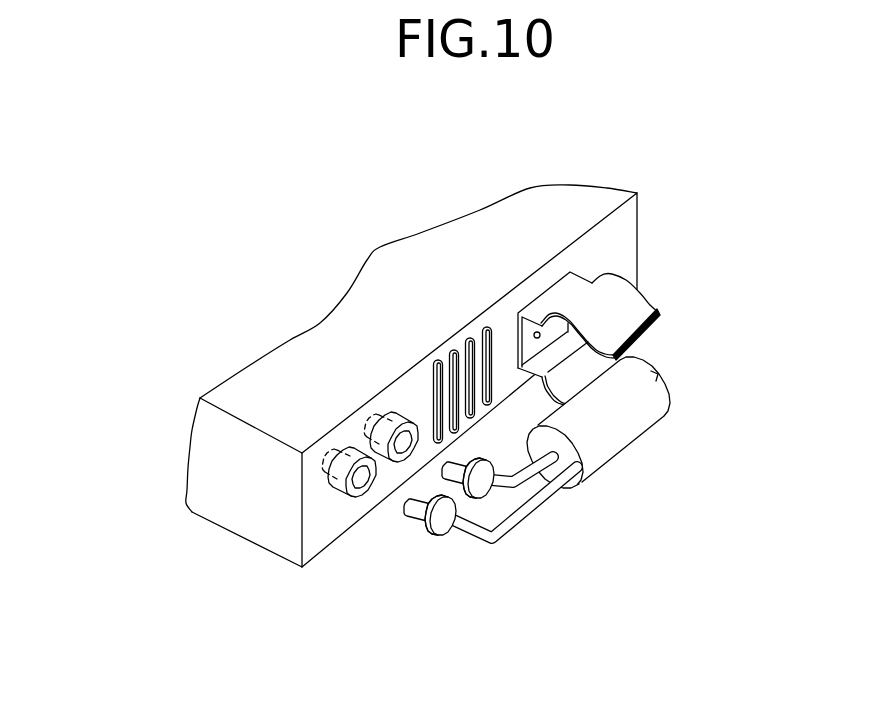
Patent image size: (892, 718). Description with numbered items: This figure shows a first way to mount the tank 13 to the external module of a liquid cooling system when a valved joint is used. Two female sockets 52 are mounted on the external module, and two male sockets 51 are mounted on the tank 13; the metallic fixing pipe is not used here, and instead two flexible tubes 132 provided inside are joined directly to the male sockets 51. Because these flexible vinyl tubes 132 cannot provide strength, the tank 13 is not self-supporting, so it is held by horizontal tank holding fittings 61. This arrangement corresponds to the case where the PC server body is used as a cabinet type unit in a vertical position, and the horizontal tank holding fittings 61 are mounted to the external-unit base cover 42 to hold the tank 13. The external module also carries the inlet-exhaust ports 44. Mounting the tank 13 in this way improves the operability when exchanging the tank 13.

The external-unit base cover 42 is at (215, 458).
The inlet-exhaust ports 44 is at (472, 337).
The female sockets 52 is at (386, 420).
The horizontal tank holding fittings 61 is at (617, 290).
The tank 13 is at (613, 433).
The flexible tubes 132 is at (533, 500).
The male sockets 51 is at (482, 482).